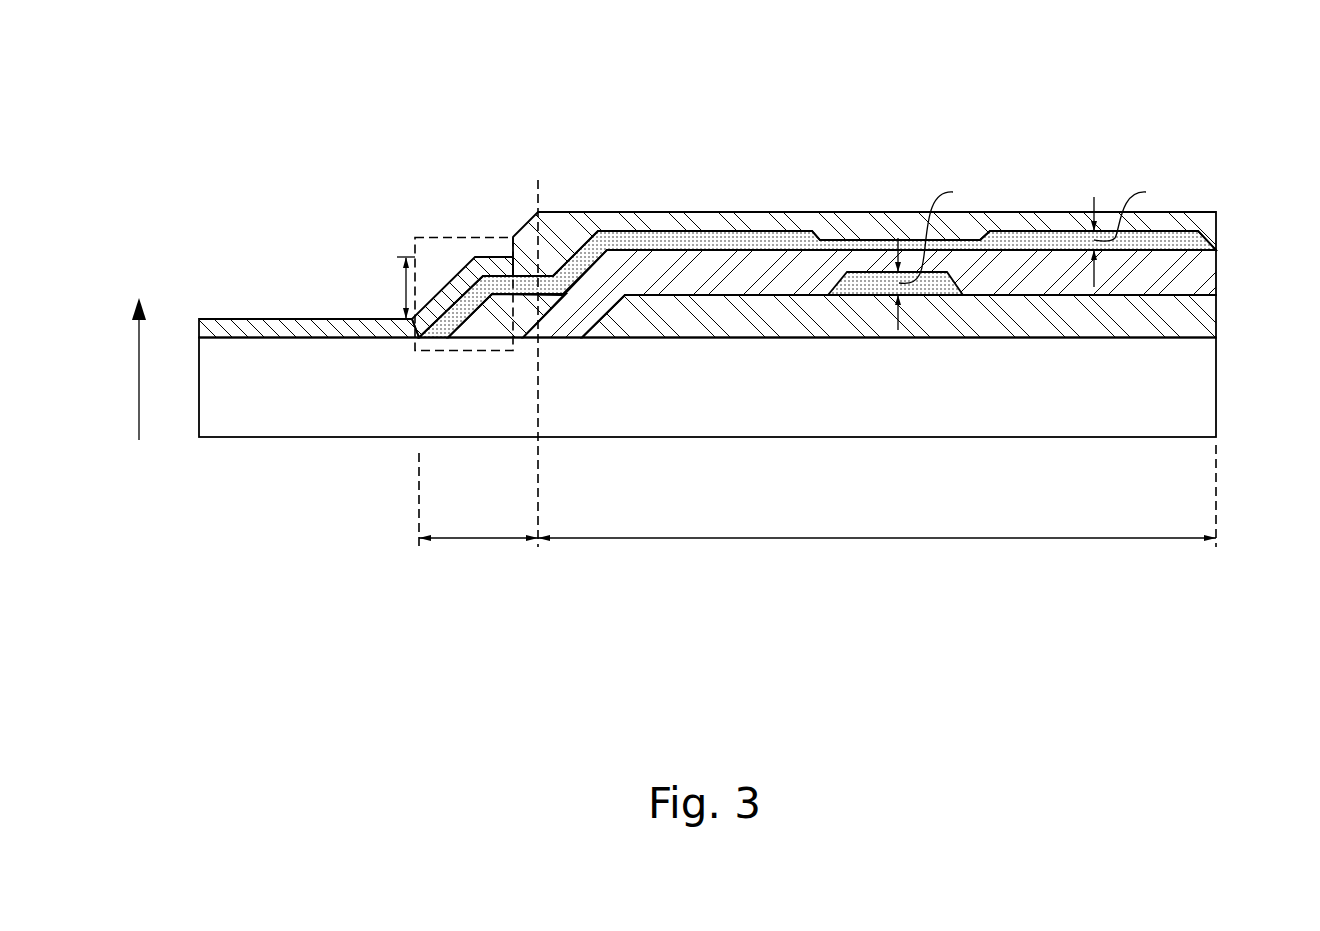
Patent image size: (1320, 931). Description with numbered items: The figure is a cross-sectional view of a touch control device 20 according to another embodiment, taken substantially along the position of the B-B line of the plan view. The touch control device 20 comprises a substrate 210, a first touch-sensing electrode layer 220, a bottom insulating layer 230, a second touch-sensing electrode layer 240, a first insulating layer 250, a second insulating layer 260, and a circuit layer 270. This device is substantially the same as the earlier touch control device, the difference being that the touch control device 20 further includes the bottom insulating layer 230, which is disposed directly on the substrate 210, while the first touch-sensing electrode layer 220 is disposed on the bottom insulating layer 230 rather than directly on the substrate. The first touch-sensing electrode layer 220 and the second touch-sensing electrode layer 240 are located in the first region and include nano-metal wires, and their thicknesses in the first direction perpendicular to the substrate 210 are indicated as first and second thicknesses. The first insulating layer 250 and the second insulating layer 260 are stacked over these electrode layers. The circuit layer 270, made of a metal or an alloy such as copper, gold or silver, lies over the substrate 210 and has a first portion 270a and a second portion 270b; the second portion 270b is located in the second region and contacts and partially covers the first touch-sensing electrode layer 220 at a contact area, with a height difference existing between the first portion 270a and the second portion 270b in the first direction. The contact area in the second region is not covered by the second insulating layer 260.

The touch control device 20 is at (122, 68).
The substrate 210 is at (1210, 387).
The first touch-sensing electrode layer 220 is at (868, 280).
The bottom insulating layer 230 is at (1210, 317).
The second touch-sensing electrode layer 240 is at (705, 237).
The first insulating layer 250 is at (1212, 275).
The second insulating layer 260 is at (1215, 232).
The circuit layer 270 is at (352, 213).
The first portion of circuit layer 270a is at (306, 325).
The second portion of circuit layer 270b is at (464, 240).